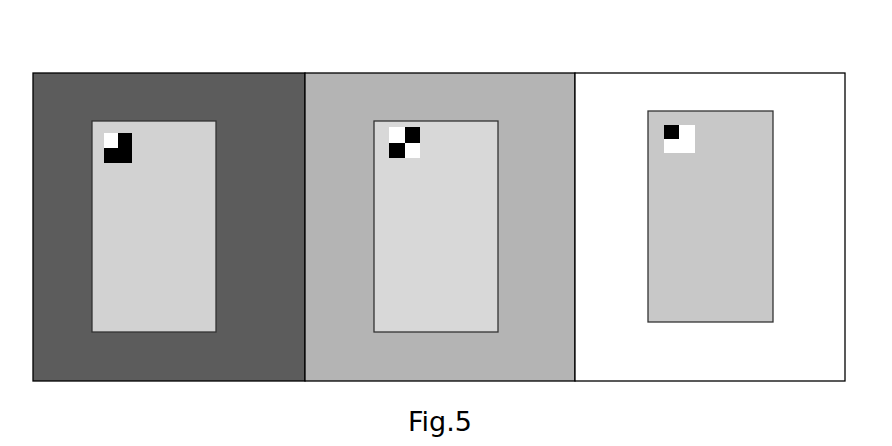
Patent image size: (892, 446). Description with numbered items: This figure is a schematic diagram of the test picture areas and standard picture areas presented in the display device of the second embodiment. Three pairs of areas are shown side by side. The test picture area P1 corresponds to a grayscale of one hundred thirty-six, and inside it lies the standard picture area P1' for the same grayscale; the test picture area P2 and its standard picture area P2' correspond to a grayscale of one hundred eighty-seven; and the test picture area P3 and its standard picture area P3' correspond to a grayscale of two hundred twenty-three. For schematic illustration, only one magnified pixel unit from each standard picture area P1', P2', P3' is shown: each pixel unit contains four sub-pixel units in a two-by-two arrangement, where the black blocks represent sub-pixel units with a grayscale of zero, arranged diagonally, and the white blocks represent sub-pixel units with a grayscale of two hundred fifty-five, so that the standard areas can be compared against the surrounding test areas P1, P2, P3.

The test picture area P1 is at (169, 198).
The standard picture area P1' is at (183, 174).
The test picture area P2 is at (440, 199).
The standard picture area P2' is at (470, 169).
The test picture area P3 is at (710, 193).
The standard picture area P3' is at (741, 169).